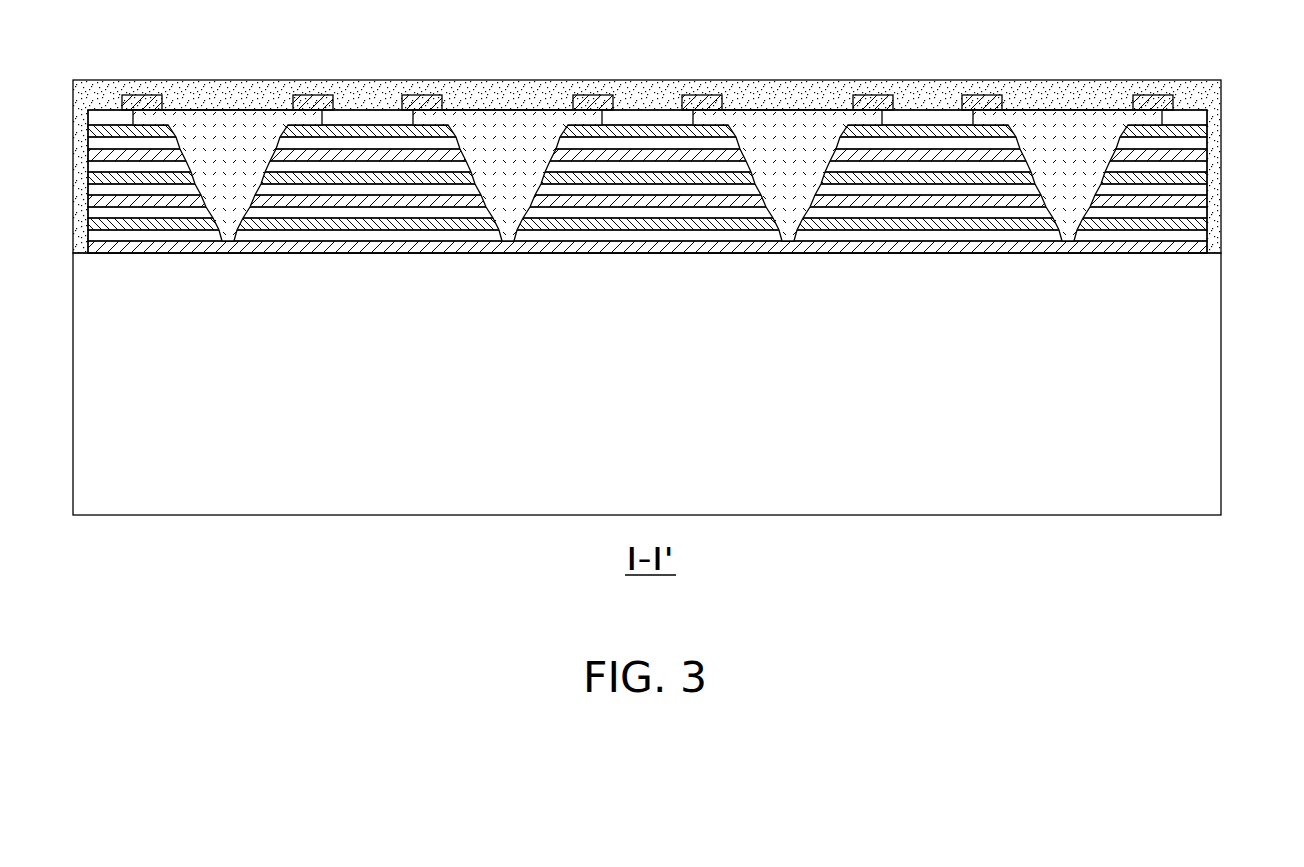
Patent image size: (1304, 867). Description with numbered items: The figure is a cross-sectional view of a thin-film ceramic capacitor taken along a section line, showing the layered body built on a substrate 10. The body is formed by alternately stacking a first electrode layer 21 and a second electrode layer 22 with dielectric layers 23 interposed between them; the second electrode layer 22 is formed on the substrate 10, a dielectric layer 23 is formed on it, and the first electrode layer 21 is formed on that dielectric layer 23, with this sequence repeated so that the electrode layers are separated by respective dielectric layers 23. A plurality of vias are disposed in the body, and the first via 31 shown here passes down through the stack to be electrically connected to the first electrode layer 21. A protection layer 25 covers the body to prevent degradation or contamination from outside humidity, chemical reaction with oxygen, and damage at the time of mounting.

The substrate 10 is at (1212, 340).
The first electrode layer 21 is at (1200, 177).
The second electrode layer 22 is at (1200, 247).
The dielectric layer 23 is at (1200, 142).
The protection layer 25 is at (1087, 93).
The first via 31 is at (1050, 143).